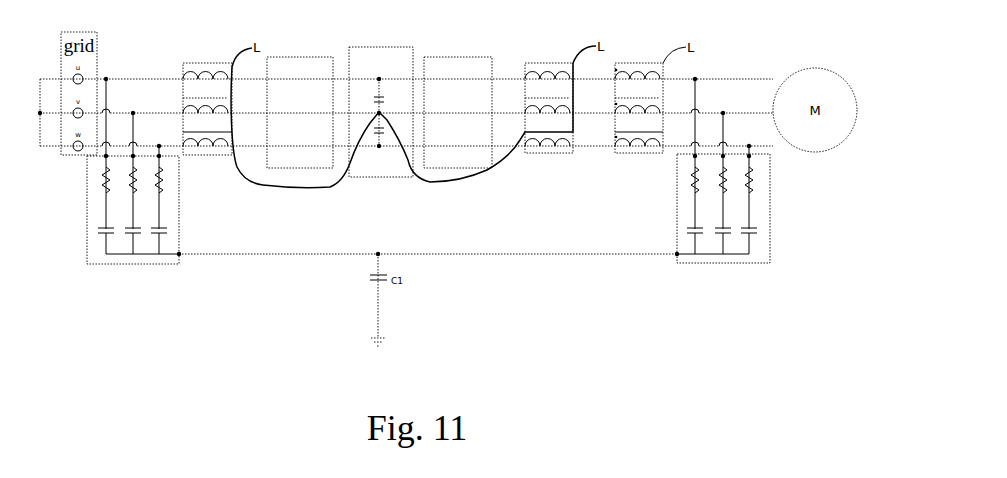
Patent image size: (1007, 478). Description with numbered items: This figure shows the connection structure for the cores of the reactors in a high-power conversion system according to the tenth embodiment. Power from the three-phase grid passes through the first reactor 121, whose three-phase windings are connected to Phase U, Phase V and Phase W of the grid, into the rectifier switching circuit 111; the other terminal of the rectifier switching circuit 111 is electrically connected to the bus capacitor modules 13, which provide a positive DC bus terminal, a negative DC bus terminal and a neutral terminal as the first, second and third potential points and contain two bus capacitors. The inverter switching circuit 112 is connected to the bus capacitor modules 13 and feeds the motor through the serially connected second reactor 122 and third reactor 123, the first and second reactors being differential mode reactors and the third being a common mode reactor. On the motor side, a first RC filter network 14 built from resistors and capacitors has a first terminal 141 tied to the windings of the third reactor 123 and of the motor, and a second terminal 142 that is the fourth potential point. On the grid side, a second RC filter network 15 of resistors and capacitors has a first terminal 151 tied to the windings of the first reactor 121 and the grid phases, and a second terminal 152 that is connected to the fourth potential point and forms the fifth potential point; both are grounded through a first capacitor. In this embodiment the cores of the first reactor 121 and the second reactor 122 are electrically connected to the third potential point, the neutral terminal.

The bus capacitor modules 13 is at (375, 47).
The first RC filter network 14 is at (757, 263).
The second RC filter network 15 is at (88, 255).
The rectifier switching circuit 111 is at (295, 66).
The inverter switching circuit 112 is at (440, 64).
The first reactor 121 is at (188, 65).
The second reactor 122 is at (530, 70).
The third reactor 123 is at (620, 70).
The first terminal 141 is at (695, 156).
The second terminal 142 is at (677, 255).
The first terminal 151 is at (106, 156).
The second terminal 152 is at (179, 255).